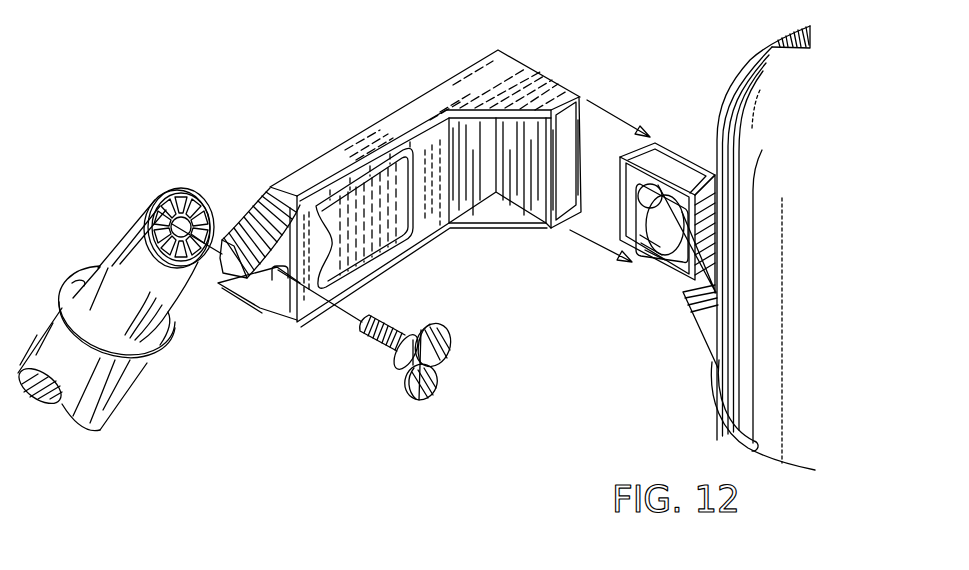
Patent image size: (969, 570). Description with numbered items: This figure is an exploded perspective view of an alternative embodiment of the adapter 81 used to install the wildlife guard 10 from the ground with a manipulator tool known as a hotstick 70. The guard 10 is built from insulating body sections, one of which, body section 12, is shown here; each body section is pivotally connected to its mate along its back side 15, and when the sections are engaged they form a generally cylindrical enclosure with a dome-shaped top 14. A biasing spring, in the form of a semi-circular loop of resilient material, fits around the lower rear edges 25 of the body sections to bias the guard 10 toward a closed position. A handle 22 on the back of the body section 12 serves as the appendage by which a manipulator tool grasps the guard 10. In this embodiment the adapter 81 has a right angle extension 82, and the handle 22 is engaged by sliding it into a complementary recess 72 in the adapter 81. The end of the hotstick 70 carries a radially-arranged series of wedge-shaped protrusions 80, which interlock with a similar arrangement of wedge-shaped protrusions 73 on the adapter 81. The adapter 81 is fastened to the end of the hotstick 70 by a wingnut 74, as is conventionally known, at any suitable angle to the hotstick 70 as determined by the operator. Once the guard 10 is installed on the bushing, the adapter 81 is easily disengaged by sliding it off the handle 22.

The wildlife guard 10 is at (747, 53).
The body section 12 is at (728, 89).
The dome-shaped top 14 is at (764, 88).
The back side 15 is at (706, 160).
The handle 22 is at (632, 272).
The lower rear edge 25 is at (735, 440).
The hotstick 70 is at (86, 254).
The recess 72 is at (557, 230).
The wedge-shaped protrusions 73 is at (228, 234).
The wingnut 74 is at (413, 395).
The wedge-shaped protrusions 80 is at (182, 190).
The adapter 81 is at (362, 127).
The right angle extension 82 is at (352, 153).